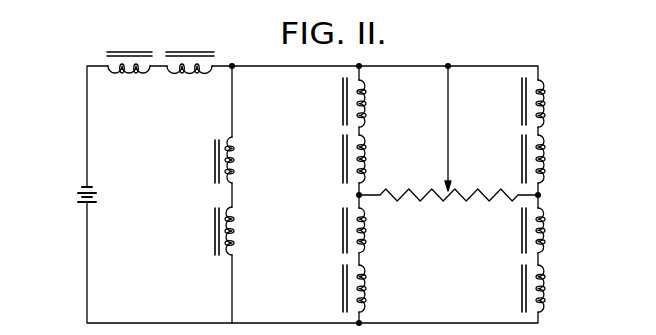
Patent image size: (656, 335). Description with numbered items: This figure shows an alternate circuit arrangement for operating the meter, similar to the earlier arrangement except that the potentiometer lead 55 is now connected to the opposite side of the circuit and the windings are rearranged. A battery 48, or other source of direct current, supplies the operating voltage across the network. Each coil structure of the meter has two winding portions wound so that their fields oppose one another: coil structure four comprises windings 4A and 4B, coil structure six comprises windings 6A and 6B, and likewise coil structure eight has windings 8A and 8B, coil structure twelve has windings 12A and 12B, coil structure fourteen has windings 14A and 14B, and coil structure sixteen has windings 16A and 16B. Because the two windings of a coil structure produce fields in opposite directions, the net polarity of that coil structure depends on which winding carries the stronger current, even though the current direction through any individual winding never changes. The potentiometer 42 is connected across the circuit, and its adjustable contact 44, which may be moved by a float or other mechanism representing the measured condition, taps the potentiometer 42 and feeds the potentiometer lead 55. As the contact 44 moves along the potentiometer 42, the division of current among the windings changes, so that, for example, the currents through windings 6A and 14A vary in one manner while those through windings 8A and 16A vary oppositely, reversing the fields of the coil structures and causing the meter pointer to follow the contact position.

The winding 4A is at (236, 153).
The winding 4B is at (130, 75).
The winding 6A is at (366, 103).
The winding 6B is at (546, 231).
The winding 8A is at (546, 103).
The winding 8B is at (366, 231).
The winding 12A is at (236, 227).
The winding 12B is at (183, 75).
The winding 14A is at (366, 155).
The winding 14B is at (546, 283).
The winding 16A is at (546, 157).
The winding 16B is at (366, 277).
The potentiometer 42 is at (412, 199).
The adjustable contact 44 is at (451, 189).
The battery 48 is at (80, 193).
The potentiometer lead 55 is at (448, 108).